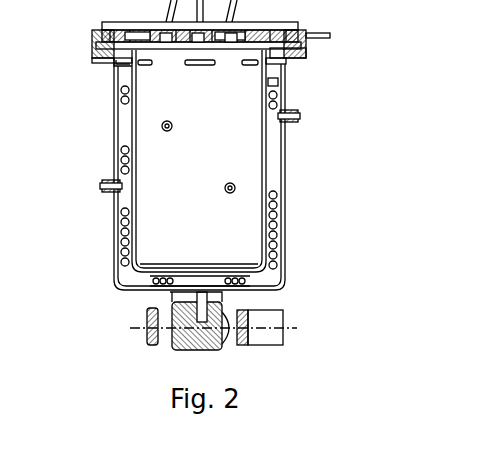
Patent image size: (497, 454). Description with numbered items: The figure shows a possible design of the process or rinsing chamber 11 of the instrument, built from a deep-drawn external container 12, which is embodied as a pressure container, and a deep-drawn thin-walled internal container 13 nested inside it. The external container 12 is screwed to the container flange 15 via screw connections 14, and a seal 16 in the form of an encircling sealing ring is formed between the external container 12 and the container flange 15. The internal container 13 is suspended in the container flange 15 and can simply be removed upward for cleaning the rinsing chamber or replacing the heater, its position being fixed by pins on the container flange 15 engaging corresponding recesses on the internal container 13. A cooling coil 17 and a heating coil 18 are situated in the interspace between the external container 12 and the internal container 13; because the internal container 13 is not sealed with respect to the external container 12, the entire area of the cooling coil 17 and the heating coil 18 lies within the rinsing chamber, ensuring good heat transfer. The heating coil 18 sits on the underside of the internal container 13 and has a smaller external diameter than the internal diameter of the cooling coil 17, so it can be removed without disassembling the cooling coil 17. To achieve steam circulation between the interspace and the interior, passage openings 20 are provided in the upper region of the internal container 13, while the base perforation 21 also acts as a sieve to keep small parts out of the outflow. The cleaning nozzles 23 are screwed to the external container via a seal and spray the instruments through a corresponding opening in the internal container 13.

The rinsing chamber 11 is at (86, 118).
The external container 12 is at (286, 222).
The internal container 13 is at (278, 186).
The screw connections 14 is at (302, 56).
The container flange 15 is at (95, 46).
The seal 16 is at (108, 62).
The cooling coil 17 is at (120, 158).
The heating coil 18 is at (142, 292).
The passage openings 20 is at (203, 70).
The base perforation 21 is at (200, 266).
The cleaning nozzles 23 is at (173, 130).